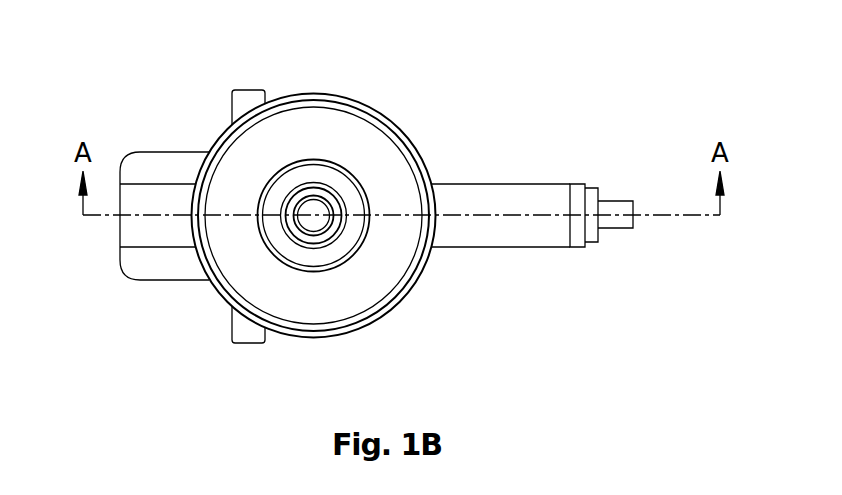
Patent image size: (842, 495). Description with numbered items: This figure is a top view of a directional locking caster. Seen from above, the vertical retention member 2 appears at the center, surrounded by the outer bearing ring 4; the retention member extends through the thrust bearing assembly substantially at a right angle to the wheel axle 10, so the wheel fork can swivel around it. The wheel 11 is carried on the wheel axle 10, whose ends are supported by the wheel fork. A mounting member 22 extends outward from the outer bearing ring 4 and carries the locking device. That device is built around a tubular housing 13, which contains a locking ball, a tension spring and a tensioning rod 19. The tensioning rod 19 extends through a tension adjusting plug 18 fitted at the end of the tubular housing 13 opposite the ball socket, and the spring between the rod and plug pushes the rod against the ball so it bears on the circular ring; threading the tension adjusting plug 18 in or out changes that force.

The vertical retention member 2 is at (313, 196).
The outer bearing ring 4 is at (388, 155).
The wheel axle 10 is at (252, 90).
The wheel 11 is at (142, 237).
The tubular housing 13 is at (577, 240).
The tension adjusting plug 18 is at (595, 190).
The tensioning rod 19 is at (618, 198).
The mounting member 22 is at (507, 237).